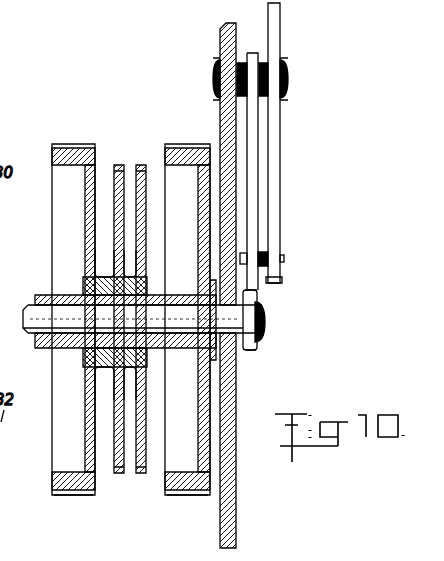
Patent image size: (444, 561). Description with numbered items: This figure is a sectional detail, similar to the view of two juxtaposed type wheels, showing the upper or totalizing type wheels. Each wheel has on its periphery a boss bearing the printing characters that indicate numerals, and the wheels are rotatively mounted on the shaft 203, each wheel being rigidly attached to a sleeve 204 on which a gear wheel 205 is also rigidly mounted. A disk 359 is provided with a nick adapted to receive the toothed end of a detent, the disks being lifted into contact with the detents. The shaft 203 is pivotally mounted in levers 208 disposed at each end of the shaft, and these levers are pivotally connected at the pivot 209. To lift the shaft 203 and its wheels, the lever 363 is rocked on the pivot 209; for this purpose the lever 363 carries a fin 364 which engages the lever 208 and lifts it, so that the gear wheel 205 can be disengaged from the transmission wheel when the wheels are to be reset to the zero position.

The shaft 203 is at (38, 314).
The sleeve 204 is at (176, 348).
The gear wheel 205 is at (114, 475).
The levers 208 is at (253, 218).
The pivot 209 is at (288, 78).
The disks 359 is at (142, 165).
The lever 363 is at (281, 166).
The fin 364 is at (282, 258).